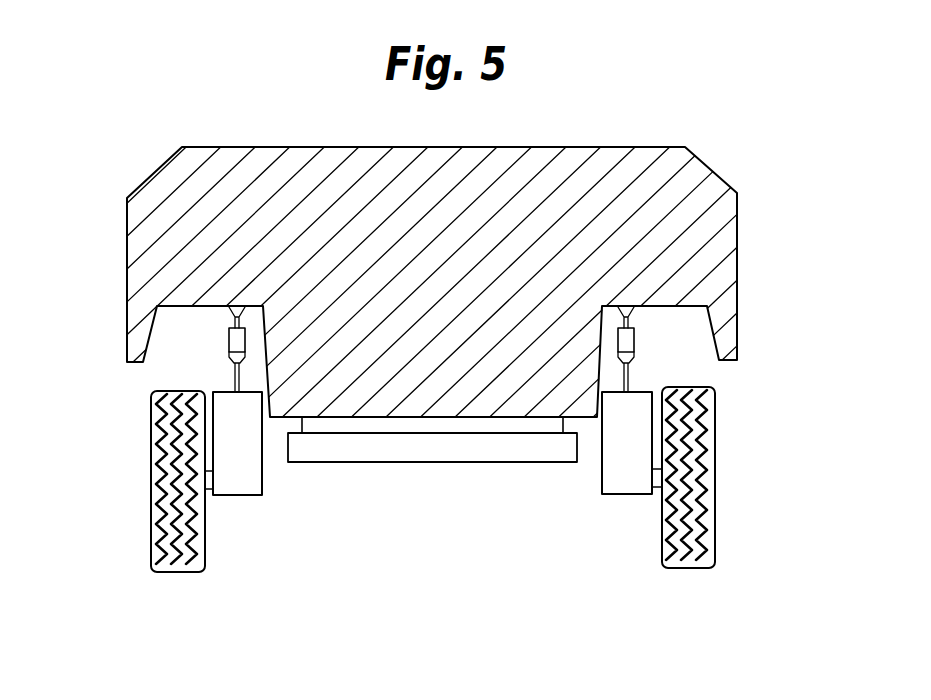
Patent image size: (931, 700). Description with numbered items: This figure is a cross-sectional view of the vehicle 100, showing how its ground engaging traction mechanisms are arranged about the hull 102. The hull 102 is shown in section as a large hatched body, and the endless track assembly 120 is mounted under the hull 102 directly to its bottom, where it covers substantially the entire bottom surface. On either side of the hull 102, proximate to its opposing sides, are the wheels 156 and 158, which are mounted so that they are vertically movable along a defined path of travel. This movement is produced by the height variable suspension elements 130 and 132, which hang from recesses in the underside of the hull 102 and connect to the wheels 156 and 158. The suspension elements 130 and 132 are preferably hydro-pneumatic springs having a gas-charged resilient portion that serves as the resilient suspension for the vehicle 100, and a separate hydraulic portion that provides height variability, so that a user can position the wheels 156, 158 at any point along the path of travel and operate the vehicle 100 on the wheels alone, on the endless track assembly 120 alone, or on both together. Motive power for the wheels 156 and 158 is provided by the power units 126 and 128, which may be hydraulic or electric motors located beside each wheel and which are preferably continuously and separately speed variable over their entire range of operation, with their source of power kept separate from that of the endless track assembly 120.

The vehicle 100 is at (616, 119).
The hull 102 is at (737, 252).
The endless track assembly 120 is at (403, 463).
The power unit 126 is at (255, 495).
The power unit 128 is at (625, 494).
The height variable suspension element 130 is at (228, 346).
The height variable suspension element 132 is at (636, 347).
The wheel 156 is at (170, 572).
The wheel 158 is at (706, 568).